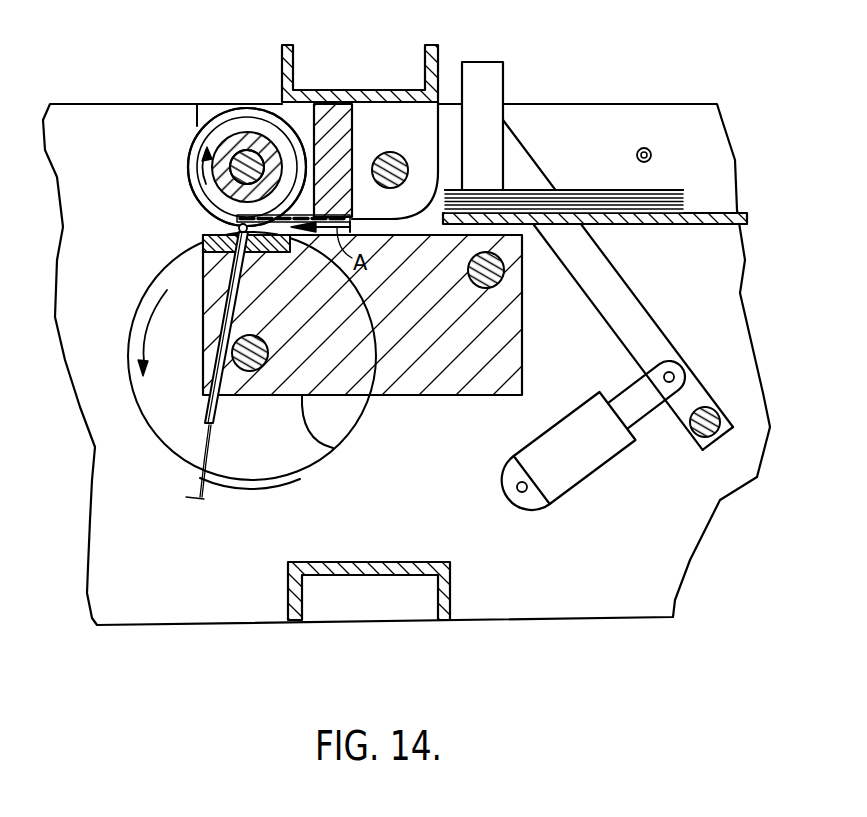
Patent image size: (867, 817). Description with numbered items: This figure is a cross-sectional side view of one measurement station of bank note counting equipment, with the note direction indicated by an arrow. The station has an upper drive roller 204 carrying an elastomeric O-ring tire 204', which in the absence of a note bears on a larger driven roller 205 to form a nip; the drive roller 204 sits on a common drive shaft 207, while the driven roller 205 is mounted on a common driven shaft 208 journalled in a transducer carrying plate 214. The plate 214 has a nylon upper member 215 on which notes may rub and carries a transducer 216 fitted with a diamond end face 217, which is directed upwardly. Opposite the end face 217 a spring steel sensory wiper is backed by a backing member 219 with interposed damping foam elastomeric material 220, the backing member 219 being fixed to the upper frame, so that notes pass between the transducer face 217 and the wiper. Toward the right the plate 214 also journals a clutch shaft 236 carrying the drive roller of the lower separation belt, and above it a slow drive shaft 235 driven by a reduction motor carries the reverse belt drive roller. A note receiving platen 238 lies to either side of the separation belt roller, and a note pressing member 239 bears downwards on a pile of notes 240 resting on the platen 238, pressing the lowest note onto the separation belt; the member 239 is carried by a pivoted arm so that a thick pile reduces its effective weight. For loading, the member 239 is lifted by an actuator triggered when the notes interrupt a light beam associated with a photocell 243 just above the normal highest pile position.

The drive roller 204 is at (203, 167).
The O-ring tire 204' is at (197, 167).
The drive shaft 207 is at (242, 150).
The end face 217 is at (238, 229).
The upper member 215 is at (240, 231).
The transducer 216 is at (203, 415).
The driven shaft 208 is at (255, 372).
The transducer carrying plate 214 is at (333, 448).
The driven roller 205 is at (262, 477).
The backing member 219 is at (342, 132).
The damping foam elastomeric material 220 is at (353, 208).
The slow drive shaft 235 is at (407, 163).
The clutch shaft 236 is at (506, 283).
The note receiving platen 238 is at (701, 224).
The note pressing member 239 is at (490, 62).
The pile of notes 240 is at (605, 188).
The photocell 243 is at (649, 149).